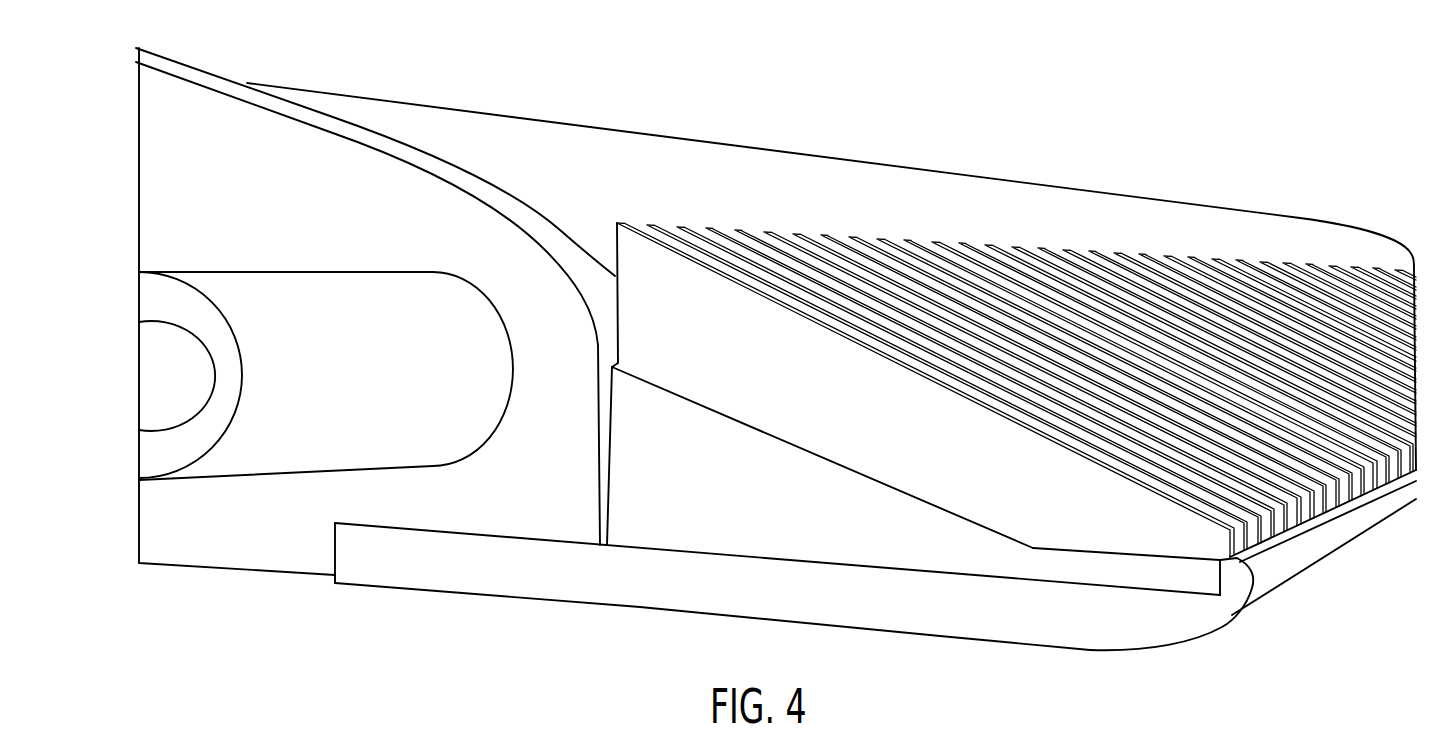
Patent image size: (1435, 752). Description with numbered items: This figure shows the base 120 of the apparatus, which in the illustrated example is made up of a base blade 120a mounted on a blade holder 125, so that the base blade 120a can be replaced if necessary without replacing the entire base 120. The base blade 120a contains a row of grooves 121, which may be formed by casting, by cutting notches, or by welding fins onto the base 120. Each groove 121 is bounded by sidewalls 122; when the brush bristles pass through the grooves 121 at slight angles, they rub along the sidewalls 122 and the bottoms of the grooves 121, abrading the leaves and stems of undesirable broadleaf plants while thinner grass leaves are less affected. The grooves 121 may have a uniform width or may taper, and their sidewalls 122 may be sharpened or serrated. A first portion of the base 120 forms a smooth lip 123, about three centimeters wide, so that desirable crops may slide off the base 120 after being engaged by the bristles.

The base 120 is at (887, 633).
The base blade 120a is at (662, 507).
The grooves 121 is at (1260, 570).
The sidewalls 122 is at (1130, 527).
The lip 123 is at (1290, 562).
The blade holder 125 is at (258, 550).